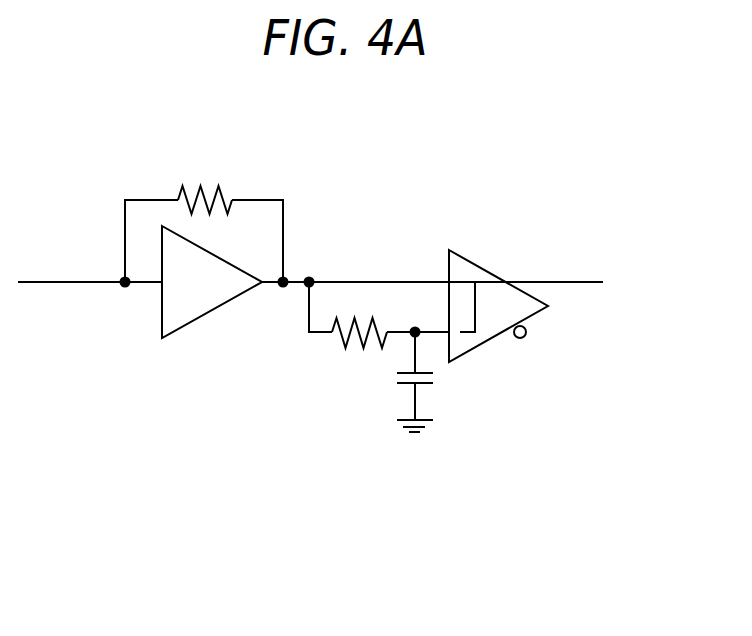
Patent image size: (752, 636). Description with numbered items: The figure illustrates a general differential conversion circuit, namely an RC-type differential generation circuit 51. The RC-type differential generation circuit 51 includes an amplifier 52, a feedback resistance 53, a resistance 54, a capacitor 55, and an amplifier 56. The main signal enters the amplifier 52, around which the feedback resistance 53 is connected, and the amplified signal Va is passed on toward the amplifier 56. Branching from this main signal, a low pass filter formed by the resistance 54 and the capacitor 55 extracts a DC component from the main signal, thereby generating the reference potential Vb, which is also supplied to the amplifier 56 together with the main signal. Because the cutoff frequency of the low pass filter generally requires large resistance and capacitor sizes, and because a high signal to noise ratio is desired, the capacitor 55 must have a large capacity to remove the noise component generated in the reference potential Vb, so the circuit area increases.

The RC-type differential generation circuit 51 is at (546, 143).
The amplifier 52 is at (213, 313).
The feedback resistance 53 is at (203, 186).
The resistance 54 is at (345, 343).
The capacitor 55 is at (422, 385).
The amplifier 56 is at (483, 268).